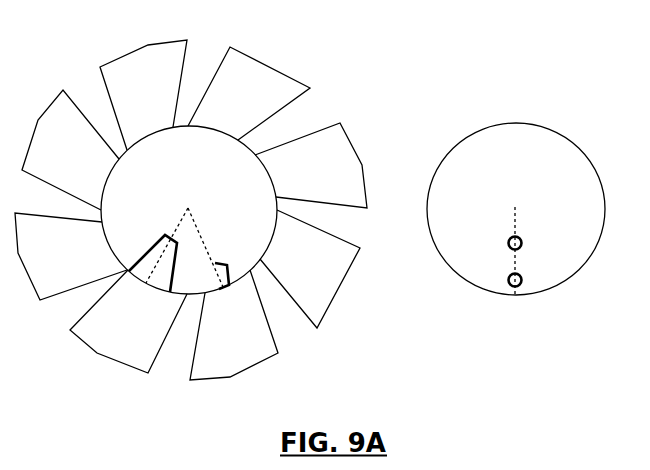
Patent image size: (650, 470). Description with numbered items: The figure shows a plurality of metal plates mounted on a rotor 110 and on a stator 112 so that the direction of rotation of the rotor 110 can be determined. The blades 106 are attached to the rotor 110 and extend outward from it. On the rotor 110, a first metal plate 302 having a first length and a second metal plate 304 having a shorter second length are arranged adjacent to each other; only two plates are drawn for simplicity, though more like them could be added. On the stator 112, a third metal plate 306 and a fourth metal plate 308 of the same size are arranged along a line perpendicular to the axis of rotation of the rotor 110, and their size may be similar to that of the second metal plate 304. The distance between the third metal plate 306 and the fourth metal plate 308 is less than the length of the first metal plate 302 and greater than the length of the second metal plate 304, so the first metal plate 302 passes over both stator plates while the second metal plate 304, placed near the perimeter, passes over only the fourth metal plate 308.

The blades 106 is at (262, 55).
The rotor 110 is at (236, 149).
The stator 112 is at (583, 155).
The first metal plate 302 is at (164, 233).
The second metal plate 304 is at (240, 277).
The third metal plate 306 is at (523, 243).
The fourth metal plate 308 is at (523, 281).